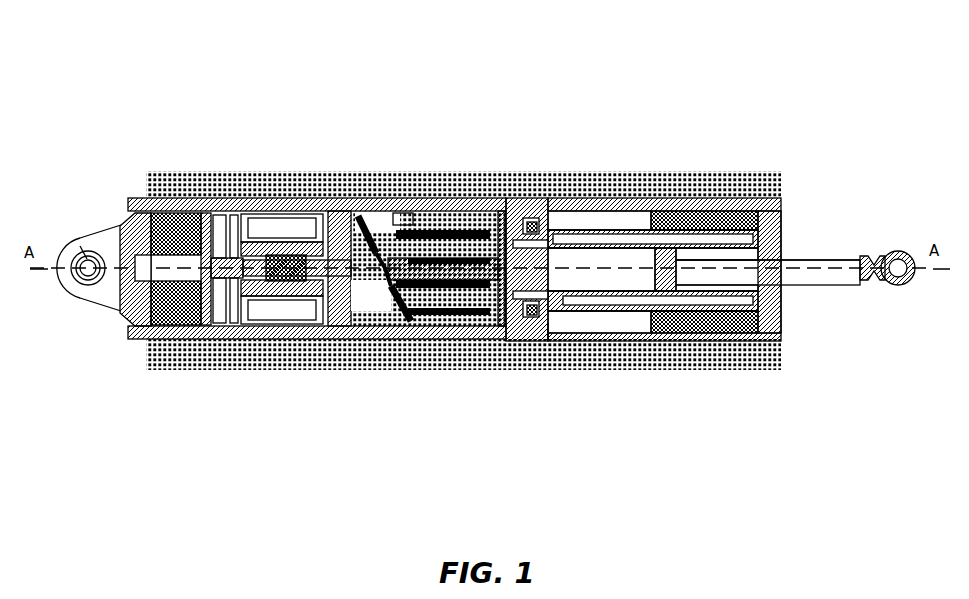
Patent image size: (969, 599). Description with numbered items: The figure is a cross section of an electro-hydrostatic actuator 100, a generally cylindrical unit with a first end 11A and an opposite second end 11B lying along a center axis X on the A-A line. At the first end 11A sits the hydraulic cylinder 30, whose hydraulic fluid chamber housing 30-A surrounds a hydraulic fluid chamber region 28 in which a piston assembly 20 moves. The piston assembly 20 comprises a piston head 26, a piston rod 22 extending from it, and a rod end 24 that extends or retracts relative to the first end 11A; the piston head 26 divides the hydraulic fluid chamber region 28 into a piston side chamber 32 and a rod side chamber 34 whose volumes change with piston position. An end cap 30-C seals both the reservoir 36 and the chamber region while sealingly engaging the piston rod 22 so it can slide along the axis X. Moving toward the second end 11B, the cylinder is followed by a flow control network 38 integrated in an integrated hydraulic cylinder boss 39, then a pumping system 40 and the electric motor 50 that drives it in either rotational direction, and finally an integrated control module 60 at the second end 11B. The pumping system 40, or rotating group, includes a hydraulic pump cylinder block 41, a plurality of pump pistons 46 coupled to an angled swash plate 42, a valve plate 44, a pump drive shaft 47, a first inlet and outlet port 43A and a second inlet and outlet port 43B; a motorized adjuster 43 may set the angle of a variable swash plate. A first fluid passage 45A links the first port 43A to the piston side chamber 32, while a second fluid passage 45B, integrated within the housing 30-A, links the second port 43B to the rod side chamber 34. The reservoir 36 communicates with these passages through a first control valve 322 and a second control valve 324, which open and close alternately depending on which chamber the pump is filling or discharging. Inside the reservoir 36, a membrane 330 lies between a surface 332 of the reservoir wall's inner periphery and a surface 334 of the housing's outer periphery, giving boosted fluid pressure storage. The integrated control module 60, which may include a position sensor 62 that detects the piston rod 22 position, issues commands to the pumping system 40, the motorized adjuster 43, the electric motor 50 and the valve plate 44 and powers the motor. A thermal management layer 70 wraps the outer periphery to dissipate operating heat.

The electro-hydrostatic actuator 100 is at (114, 90).
The first end 11A is at (810, 370).
The second end 11B is at (90, 204).
The piston assembly 20 is at (822, 252).
The piston rod 22 is at (827, 252).
The rod end 24 is at (888, 244).
The piston head 26 is at (705, 318).
The hydraulic fluid chamber region 28 is at (550, 346).
The hydraulic cylinder 30 is at (776, 192).
The hydraulic fluid chamber housing 30-A is at (712, 245).
The end cap 30-C is at (792, 240).
The piston side chamber 32 is at (562, 272).
The rod side chamber 34 is at (757, 235).
The reservoir 36 is at (585, 215).
The flow control network 38 is at (545, 346).
The integrated hydraulic cylinder boss 39 is at (540, 320).
The pumping system 40 is at (490, 346).
The hydraulic pump cylinder block 41 is at (440, 305).
The swash plate 42 is at (352, 208).
The motorized adjuster 43 is at (350, 318).
The first inlet and outlet port 43A is at (490, 225).
The second inlet and outlet port 43B is at (492, 292).
The valve plate 44 is at (496, 205).
The first fluid passage 45A is at (552, 213).
The second fluid passage 45B is at (598, 318).
The pump pistons 46 is at (392, 218).
The pump drive shaft 47 is at (303, 255).
The electric motor 50 is at (325, 346).
The integrated control module 60 is at (225, 346).
The position sensor 62 is at (139, 236).
The thermal management layer 70 is at (592, 174).
The first control valve 322 is at (522, 222).
The second control valve 324 is at (523, 302).
The membrane 330 is at (697, 230).
The surface of inner periphery of reservoir wall 332 is at (678, 213).
The surface of outer periphery of hydraulic fluid chamber housing 334 is at (640, 200).
The center axis X is at (835, 265).